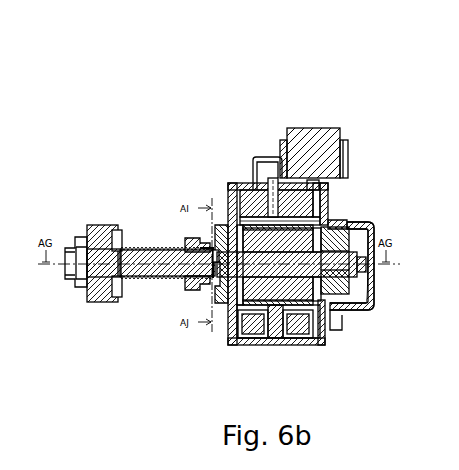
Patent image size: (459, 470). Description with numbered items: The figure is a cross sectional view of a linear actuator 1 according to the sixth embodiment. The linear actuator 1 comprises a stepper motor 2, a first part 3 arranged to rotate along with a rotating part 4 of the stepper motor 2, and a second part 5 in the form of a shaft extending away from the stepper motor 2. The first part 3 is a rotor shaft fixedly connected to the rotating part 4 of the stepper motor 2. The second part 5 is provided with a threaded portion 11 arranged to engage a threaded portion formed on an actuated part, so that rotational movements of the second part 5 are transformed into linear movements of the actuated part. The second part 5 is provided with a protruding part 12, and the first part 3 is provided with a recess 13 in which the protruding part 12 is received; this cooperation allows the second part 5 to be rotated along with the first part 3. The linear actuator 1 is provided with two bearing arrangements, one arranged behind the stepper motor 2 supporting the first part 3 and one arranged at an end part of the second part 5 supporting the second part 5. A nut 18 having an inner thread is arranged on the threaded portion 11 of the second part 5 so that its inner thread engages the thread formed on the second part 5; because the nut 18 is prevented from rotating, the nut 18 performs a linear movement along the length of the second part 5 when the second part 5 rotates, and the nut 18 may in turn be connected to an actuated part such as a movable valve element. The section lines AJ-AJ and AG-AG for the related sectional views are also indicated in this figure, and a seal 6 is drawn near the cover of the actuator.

The linear actuator 1 is at (313, 95).
The stepper motor 2 is at (300, 330).
The first part 3 is at (328, 260).
The rotating part 4 is at (275, 292).
The second part 5 is at (133, 273).
The seal 6 is at (214, 253).
The threaded portion 11 is at (167, 252).
The protruding part 12 is at (213, 273).
The recess 13 is at (216, 250).
The nut 18 is at (192, 280).